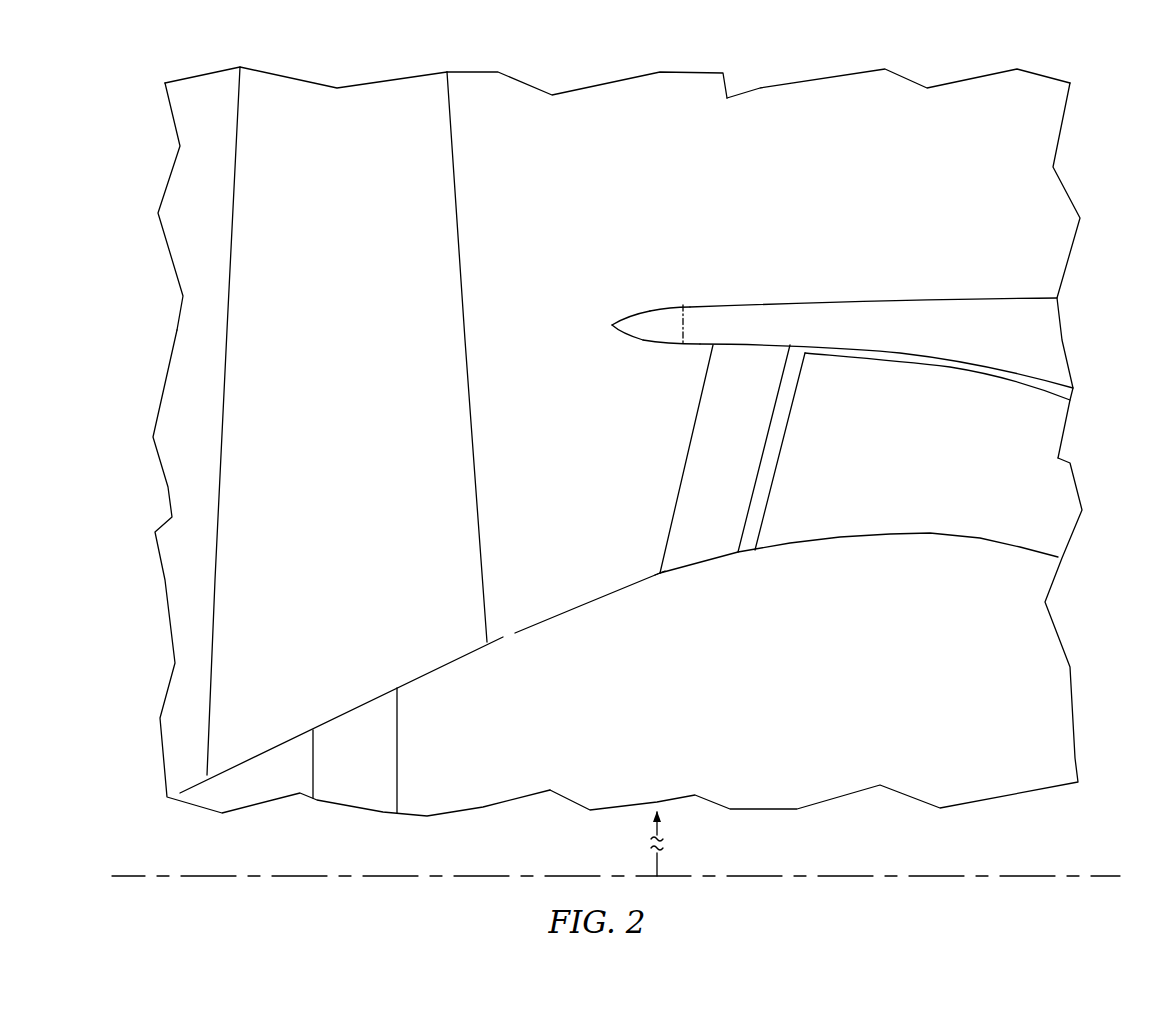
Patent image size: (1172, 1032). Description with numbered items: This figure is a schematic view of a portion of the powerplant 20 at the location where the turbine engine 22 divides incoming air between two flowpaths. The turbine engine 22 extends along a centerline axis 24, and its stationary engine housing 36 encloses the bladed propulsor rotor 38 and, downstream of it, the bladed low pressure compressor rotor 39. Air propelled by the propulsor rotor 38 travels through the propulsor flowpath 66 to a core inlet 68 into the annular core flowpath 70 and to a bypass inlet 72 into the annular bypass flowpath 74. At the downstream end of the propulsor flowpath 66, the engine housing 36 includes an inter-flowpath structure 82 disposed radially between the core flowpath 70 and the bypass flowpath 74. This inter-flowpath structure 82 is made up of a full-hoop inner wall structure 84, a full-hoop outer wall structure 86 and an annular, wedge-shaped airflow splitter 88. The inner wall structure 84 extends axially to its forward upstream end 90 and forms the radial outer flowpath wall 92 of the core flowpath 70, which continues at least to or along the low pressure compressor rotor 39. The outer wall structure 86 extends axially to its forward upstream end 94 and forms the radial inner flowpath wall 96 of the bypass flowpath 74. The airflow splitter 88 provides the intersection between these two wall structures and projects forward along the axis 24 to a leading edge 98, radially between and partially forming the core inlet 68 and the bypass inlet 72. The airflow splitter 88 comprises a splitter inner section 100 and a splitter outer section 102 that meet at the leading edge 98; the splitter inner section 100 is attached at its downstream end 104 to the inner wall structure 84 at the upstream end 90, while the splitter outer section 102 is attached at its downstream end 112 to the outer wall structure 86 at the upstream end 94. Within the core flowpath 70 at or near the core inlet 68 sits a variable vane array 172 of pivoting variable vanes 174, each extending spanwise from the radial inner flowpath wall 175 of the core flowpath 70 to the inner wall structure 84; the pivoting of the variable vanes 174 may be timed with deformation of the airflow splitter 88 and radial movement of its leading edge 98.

The gas turbine engine 20 is at (244, 173).
The turbine engine 22 is at (131, 86).
The axis 24 is at (606, 832).
The engine housing 36 is at (1044, 270).
The propulsor rotor 38 is at (204, 452).
The low pressure compressor rotor 39 is at (1030, 563).
The propulsor flowpath 66 is at (213, 232).
The core inlet 68 is at (607, 458).
The core flowpath 70 is at (1044, 487).
The bypass inlet 72 is at (612, 183).
The bypass flowpath 74 is at (843, 193).
The inter-flowpath structure 82 is at (789, 313).
The inner wall structure 84 is at (916, 381).
The outer wall structure 86 is at (873, 261).
The airflow splitter 88 is at (596, 336).
The upstream end of inner wall structure 90 is at (678, 345).
The outer flowpath wall 92 is at (763, 350).
The upstream end of outer wall structure 94 is at (682, 305).
The inner flowpath wall 96 is at (808, 304).
The leading edge 98 is at (611, 327).
The splitter inner section 100 is at (630, 342).
The splitter outer section 102 is at (640, 310).
The downstream end of splitter inner section 104 is at (683, 345).
The downstream end of splitter outer section 112 is at (871, 261).
The variable vane array 172 is at (657, 515).
The variable vanes 174 is at (657, 553).
The inner flowpath wall 175 is at (688, 558).